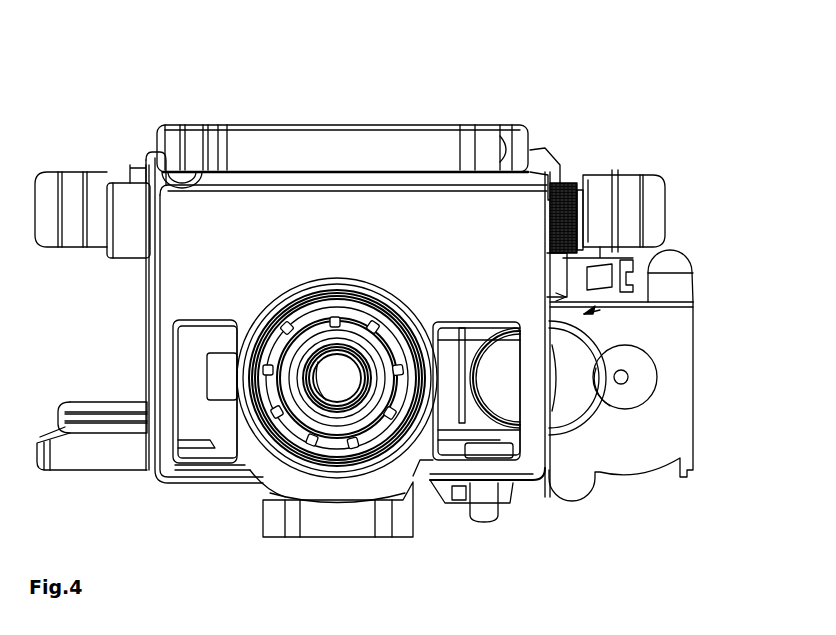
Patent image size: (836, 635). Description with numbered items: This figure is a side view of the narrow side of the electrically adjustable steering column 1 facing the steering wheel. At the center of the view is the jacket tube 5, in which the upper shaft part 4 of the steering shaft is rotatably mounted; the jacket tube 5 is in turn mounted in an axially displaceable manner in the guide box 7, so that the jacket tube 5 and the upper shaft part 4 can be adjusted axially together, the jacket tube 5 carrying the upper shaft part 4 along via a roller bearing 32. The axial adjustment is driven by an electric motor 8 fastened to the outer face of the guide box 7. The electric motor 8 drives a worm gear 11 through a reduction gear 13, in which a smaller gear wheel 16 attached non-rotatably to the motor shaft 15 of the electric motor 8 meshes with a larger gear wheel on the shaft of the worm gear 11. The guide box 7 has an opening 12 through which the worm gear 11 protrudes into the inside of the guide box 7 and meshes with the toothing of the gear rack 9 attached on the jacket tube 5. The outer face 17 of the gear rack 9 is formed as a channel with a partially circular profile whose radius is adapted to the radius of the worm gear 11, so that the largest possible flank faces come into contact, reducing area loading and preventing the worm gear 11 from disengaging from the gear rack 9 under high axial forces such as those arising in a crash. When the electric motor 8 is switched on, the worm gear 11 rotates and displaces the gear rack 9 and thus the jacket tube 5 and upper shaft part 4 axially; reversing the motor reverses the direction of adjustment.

The electrically adjustable steering column 1 is at (311, 112).
The upper shaft part 4 is at (296, 466).
The jacket tube 5 is at (403, 303).
The guide box 7 is at (180, 280).
The electric motor 8 is at (660, 333).
The gear rack 9 is at (491, 325).
The worm gear 11 is at (643, 410).
The opening 12 is at (549, 357).
The reduction gear 13 is at (586, 312).
The motor shaft 15 is at (628, 375).
The smaller gear wheel 16 is at (641, 394).
The outer face of the gear rack 17 is at (473, 325).
The roller bearing 32 is at (228, 470).